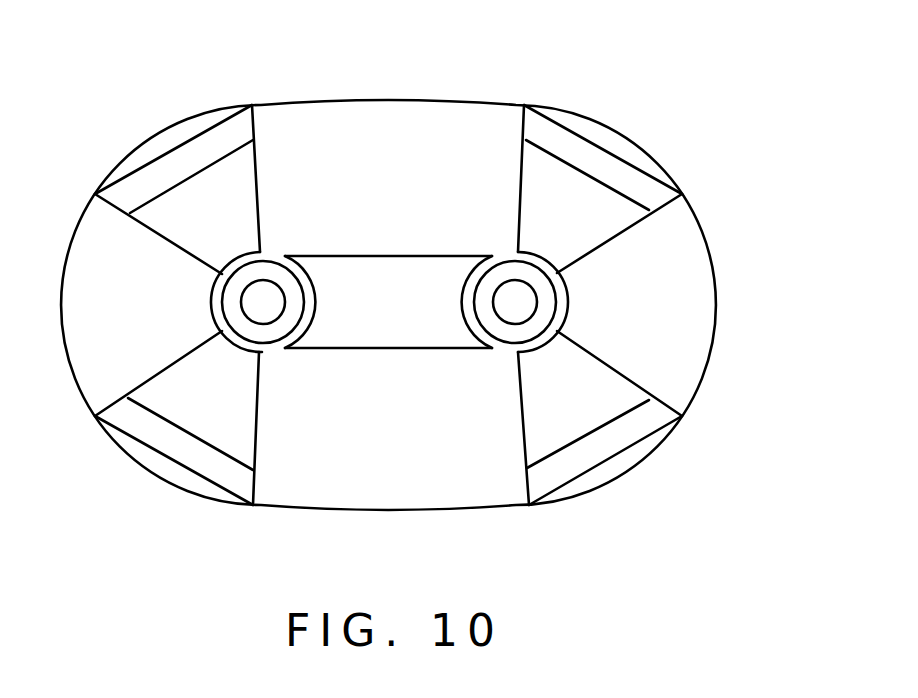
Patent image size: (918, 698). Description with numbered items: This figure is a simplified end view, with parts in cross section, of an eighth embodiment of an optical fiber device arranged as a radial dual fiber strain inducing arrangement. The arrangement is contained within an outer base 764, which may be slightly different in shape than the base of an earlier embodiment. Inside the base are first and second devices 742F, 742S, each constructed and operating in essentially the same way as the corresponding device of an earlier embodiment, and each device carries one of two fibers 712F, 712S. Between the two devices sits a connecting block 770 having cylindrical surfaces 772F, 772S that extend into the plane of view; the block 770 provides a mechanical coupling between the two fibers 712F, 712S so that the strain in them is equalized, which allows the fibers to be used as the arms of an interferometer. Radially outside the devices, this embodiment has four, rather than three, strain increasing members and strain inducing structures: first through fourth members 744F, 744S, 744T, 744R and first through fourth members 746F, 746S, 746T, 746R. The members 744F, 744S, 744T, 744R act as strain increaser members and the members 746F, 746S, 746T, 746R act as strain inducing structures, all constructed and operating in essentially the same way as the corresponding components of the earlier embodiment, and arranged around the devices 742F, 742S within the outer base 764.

The outer base 764 is at (450, 507).
The connecting block 770 is at (362, 277).
The second device 742S is at (214, 302).
The first device 742F is at (560, 292).
The cylindrical surface 772S is at (290, 325).
The cylindrical surface 772F is at (485, 322).
The second fiber 712S is at (263, 297).
The first fiber 712F is at (511, 295).
The third strain increaser member 744T is at (248, 173).
The second strain increaser member 744S is at (540, 180).
The fourth strain increaser member 744R is at (203, 400).
The first strain increaser member 744F is at (538, 410).
The third strain inducing structure 746T is at (173, 167).
The second strain inducing structure 746S is at (593, 155).
The fourth strain inducing structure 746R is at (203, 457).
The first strain inducing structure 746F is at (585, 445).